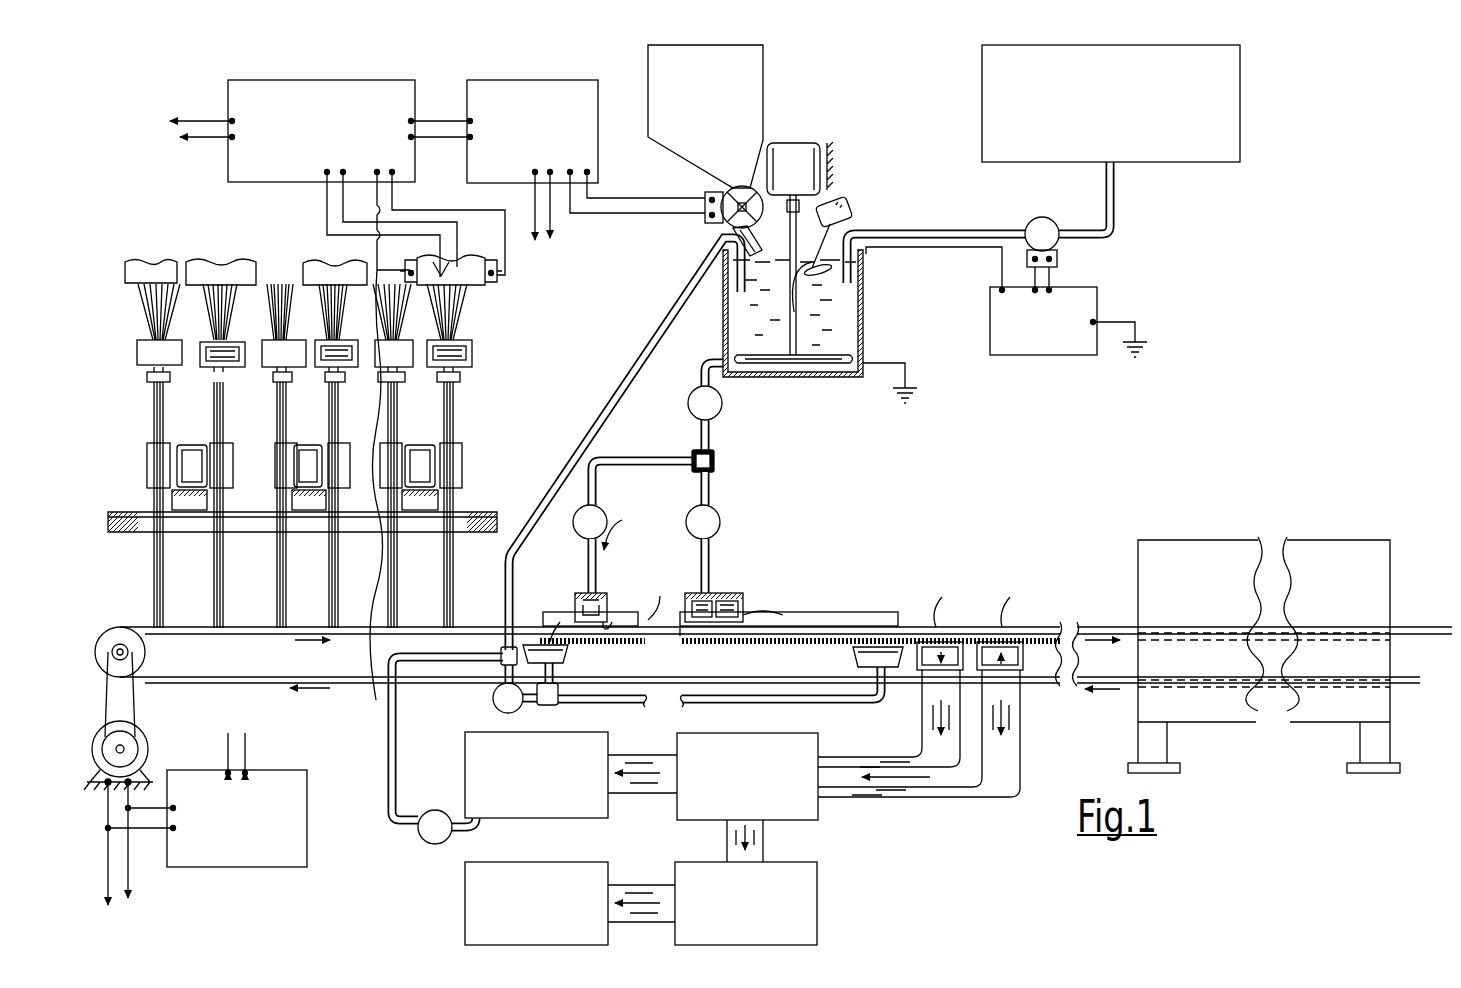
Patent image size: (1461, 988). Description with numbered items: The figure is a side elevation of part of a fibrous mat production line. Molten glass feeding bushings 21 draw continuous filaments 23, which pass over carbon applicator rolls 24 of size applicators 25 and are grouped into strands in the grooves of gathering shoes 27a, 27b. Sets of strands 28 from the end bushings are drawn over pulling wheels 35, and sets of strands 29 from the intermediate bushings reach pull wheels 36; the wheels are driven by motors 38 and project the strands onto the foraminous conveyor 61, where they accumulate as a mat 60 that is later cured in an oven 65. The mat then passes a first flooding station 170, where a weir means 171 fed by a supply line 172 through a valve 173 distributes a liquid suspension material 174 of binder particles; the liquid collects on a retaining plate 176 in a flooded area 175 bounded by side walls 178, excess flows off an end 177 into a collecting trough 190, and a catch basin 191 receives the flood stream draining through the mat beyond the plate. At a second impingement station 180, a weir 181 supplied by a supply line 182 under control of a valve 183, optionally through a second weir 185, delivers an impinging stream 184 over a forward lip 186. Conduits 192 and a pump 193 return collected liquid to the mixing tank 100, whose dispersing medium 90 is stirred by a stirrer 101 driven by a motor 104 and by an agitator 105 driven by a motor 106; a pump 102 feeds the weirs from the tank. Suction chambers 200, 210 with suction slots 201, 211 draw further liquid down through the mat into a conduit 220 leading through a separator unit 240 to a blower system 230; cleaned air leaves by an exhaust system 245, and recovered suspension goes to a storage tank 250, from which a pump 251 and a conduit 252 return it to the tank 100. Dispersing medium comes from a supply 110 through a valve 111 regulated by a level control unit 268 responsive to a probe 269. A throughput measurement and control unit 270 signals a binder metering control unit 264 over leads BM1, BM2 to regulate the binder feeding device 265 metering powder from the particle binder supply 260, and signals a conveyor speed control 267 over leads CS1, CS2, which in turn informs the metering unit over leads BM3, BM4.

The molten glass feeding bushings 21 is at (175, 215).
The continuous filaments 23 is at (148, 293).
The carbon applicator rolls 24 is at (210, 342).
The size applicators 25 is at (140, 338).
The gathering shoe 27a is at (144, 375).
The gathering shoe 27b is at (296, 376).
The sets of strands 28 is at (494, 394).
The sets of strands 29 is at (334, 398).
The pulling wheels 35 is at (144, 444).
The pull wheels 36 is at (280, 434).
The motors 38 is at (186, 450).
The mat 60 is at (511, 610).
The conveyor 61 is at (168, 628).
The oven 65 is at (1168, 542).
The dispersing medium 90 is at (870, 295).
The suspension mixing tank 100 is at (863, 312).
The stirrer 101 is at (842, 363).
The pump 102 is at (690, 388).
The motor 104 is at (806, 142).
The agitator 105 is at (852, 276).
The motor 106 is at (846, 196).
The strand dispersing medium supply 110 is at (983, 70).
The valve 111 is at (1058, 196).
The first liquid impingement or flooding station 170 is at (631, 546).
The weir means 171 is at (612, 584).
The supply line 172 is at (680, 455).
The valve 173 is at (605, 511).
The liquid suspension material 174 is at (580, 592).
The flooded area 175 is at (672, 600).
The liquid retaining plate 176 is at (703, 655).
The end of liquid retaining plate 177 is at (558, 622).
The side walls 178 is at (630, 586).
The second liquid impingement station 180 is at (728, 535).
The weir 181 is at (718, 602).
The supply line 182 is at (720, 556).
The valve 183 is at (720, 492).
The impinging stream 184 is at (756, 616).
The second weir 185 is at (705, 584).
The forward lip 186 is at (740, 618).
The collecting trough 190 is at (582, 655).
The catch basin 191 is at (854, 650).
The conduits 192 is at (688, 276).
The pump 193 is at (493, 698).
The suction chamber 200 is at (948, 643).
The suction slot 201 is at (950, 580).
The suction chamber 210 is at (1020, 630).
The suction slot 211 is at (995, 600).
The conduit 220 is at (912, 794).
The blower system 230 is at (814, 862).
The separator unit 240 is at (702, 732).
The exhaust system 245 is at (465, 917).
The retrieved suspension storage tank 250 is at (465, 748).
The pump 251 is at (436, 810).
The conduit 252 is at (390, 745).
The particle binder supply 260 is at (645, 70).
The binder metering control unit 264 is at (538, 80).
The binder feeding device 265 is at (719, 192).
The conveyor speed control 267 is at (269, 770).
The level control unit 268 is at (1077, 288).
The probe 269 is at (862, 254).
The throughput measurement and control unit 270 is at (292, 80).
The lead CS1 is at (195, 113).
The lead CS2 is at (196, 129).
The lead BM1 is at (456, 121).
The lead BM2 is at (421, 137).
The lead BM3 is at (547, 244).
The lead BM4 is at (543, 244).